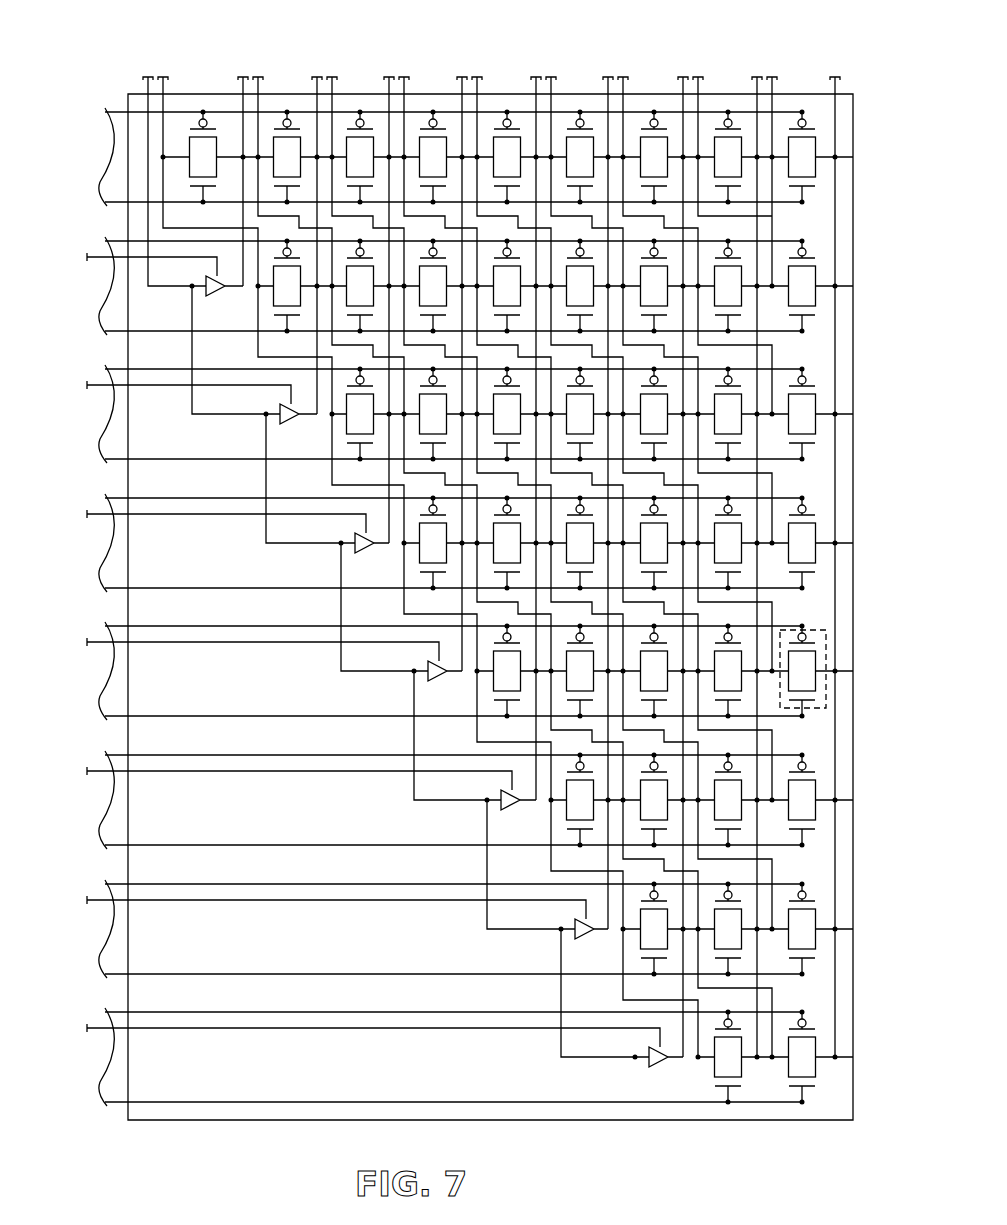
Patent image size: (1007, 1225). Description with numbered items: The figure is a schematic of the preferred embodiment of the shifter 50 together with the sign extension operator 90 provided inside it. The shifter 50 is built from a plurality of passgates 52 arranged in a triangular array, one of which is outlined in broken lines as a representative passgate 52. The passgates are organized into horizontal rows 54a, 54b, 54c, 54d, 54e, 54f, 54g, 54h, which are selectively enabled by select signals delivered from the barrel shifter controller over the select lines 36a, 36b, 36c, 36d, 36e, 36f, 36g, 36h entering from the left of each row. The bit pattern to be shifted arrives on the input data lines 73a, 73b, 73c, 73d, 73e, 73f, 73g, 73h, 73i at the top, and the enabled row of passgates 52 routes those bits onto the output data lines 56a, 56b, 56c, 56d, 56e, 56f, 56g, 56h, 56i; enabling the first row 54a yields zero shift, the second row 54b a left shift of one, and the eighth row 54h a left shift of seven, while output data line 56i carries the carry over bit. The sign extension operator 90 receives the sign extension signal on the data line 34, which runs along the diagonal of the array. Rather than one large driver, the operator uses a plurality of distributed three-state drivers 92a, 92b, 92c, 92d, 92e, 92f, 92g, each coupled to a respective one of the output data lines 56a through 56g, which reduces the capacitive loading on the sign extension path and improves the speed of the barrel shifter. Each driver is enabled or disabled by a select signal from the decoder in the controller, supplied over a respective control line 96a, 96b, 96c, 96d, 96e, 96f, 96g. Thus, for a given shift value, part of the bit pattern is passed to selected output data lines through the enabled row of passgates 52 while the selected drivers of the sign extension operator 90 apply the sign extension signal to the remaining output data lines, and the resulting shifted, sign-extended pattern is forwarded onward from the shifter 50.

The data line 34 is at (143, 84).
The select line 36a is at (86, 146).
The select line 36b is at (86, 285).
The select line 36c is at (86, 413).
The select line 36d is at (86, 542).
The select line 36e is at (86, 670).
The select line 36f is at (86, 799).
The select line 36g is at (86, 928).
The select line 36h is at (86, 1056).
The shifter 50 is at (202, 1120).
The passgate 52 is at (832, 690).
The first row of passgates 54a is at (862, 146).
The second row of passgates 54b is at (862, 275).
The horizontal row of passgates 54c is at (862, 403).
The horizontal row of passgates 54d is at (862, 532).
The horizontal row of passgates 54e is at (862, 660).
The sixth row of passgates 54f is at (862, 789).
The horizontal row of passgates 54g is at (862, 918).
The eighth row of passgates 54h is at (862, 1046).
The output data line 56a is at (243, 80).
The output data line 56b is at (317, 80).
The output data line 56c is at (389, 80).
The output data line 56d is at (462, 80).
The output data line 56e is at (536, 80).
The output data line 56f is at (608, 80).
The output data line 56g is at (680, 1058).
The output data line 56h is at (753, 1058).
The output data line 56i is at (823, 1058).
The input data line 73a is at (168, 78).
The input data line 73b is at (263, 78).
The input data line 73c is at (337, 78).
The input data line 73d is at (409, 78).
The input data line 73e is at (482, 78).
The input data line 73f is at (556, 78).
The input data line 73g is at (628, 78).
The input data line 73h is at (703, 78).
The input data line 73i is at (777, 78).
The sign extension operator 90 is at (386, 931).
The sign extension driver 92a is at (216, 297).
The sign extension driver 92b is at (291, 425).
The sign extension driver 92c is at (364, 553).
The sign extension driver 92d is at (437, 682).
The sign extension driver 92e is at (510, 811).
The sign extension driver 92f is at (585, 940).
The sign extension driver 92g is at (658, 1069).
The control line 96a is at (125, 258).
The control line 96b is at (150, 386).
The control line 96c is at (152, 515).
The control line 96d is at (175, 643).
The control line 96e is at (180, 772).
The control line 96f is at (180, 901).
The control line 96g is at (180, 1029).